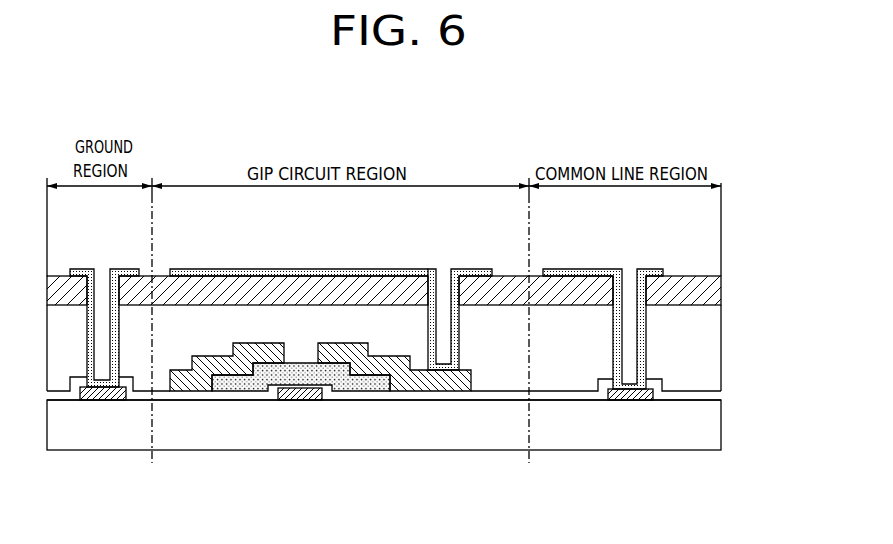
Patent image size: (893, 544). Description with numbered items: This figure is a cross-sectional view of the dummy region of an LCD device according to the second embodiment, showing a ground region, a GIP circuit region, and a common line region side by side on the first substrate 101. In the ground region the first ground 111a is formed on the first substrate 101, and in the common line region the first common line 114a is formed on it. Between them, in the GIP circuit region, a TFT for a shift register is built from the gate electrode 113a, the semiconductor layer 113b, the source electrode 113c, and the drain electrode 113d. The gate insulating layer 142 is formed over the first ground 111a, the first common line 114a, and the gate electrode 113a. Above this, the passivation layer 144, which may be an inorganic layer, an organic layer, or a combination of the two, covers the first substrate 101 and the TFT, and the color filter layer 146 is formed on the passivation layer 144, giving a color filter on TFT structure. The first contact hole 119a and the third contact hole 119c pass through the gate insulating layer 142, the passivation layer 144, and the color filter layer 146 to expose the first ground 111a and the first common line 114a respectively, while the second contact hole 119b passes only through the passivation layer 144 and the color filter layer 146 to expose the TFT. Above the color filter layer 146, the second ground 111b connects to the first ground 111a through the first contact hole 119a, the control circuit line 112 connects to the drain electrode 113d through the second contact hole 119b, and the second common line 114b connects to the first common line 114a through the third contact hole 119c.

The first substrate 101 is at (712, 436).
The gate insulating layer 142 is at (712, 398).
The passivation layer 144 is at (712, 337).
The color filter layer 146 is at (712, 293).
The first ground 111a is at (101, 400).
The second ground 111b is at (72, 268).
The first contact hole 119a is at (102, 292).
The control circuit line 112 is at (302, 269).
The second contact hole 119b is at (444, 292).
The gate electrode 113a is at (298, 400).
The semiconductor layer 113b is at (358, 391).
The source electrode 113c is at (195, 391).
The drain electrode 113d is at (415, 391).
The first common line 114a is at (630, 400).
The second common line 114b is at (585, 269).
The third contact hole 119c is at (631, 292).